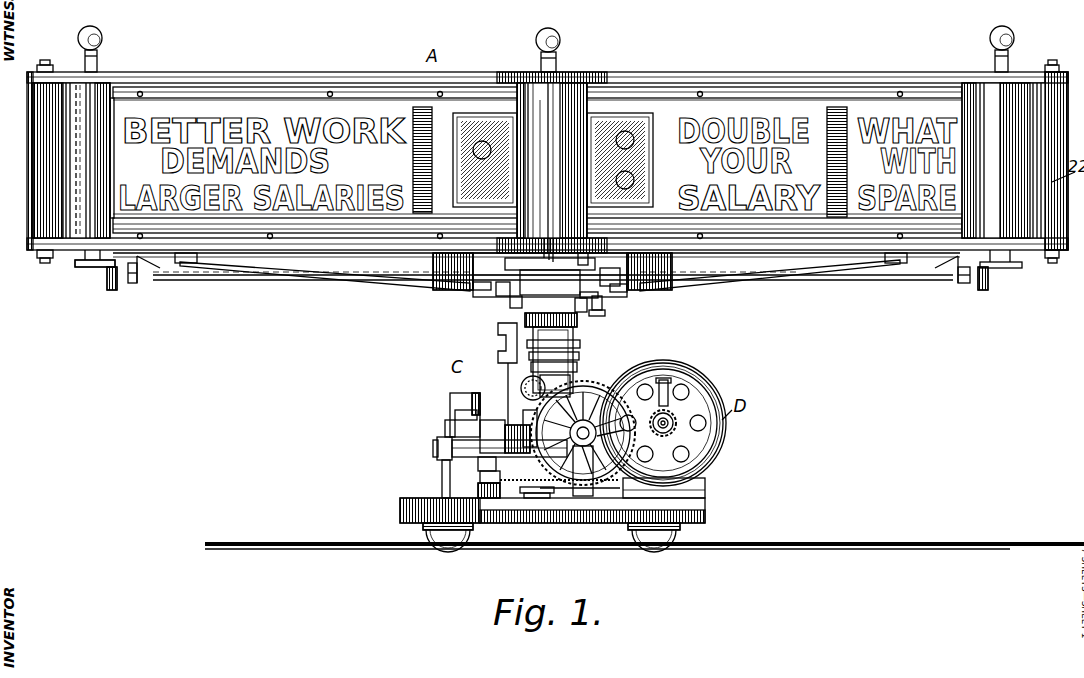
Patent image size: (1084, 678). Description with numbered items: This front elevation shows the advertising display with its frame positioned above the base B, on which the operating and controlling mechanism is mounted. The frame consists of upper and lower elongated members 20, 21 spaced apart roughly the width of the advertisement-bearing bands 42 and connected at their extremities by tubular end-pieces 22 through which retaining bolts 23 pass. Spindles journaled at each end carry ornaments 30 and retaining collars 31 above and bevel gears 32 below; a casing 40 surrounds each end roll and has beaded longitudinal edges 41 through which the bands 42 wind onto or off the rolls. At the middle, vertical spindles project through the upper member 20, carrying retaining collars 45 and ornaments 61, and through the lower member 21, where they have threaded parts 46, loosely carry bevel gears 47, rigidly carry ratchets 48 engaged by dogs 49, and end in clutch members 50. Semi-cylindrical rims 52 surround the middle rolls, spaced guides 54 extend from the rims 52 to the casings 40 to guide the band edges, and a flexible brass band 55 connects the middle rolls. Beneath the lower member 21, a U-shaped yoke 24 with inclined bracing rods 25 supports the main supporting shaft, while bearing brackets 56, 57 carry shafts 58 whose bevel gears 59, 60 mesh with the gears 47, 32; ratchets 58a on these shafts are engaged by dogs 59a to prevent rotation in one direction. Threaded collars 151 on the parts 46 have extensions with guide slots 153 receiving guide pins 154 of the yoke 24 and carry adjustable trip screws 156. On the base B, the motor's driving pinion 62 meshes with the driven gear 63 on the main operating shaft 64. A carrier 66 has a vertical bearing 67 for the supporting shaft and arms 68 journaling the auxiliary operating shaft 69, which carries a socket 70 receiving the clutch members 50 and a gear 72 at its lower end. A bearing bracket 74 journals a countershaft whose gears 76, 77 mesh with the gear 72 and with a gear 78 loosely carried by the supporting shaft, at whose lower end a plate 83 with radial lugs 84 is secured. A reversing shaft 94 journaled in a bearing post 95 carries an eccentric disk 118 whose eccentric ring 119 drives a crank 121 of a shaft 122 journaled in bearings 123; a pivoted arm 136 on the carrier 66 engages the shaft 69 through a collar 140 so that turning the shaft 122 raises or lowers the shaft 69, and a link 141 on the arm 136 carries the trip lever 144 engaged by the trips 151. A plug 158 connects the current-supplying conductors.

The upper elongated member 20 is at (360, 73).
The lower elongated member 21 is at (343, 245).
The tubular end-pieces 22 is at (40, 172).
The retaining bolts 23 is at (50, 69).
The U-shaped yoke 24 is at (510, 264).
The inclined bracing rods 25 is at (276, 266).
The ornaments 30 is at (101, 44).
The retaining collars 31 is at (98, 70).
The bevel gears 32 is at (86, 268).
The casing 40 is at (72, 116).
The beaded longitudinal edges 41 is at (110, 116).
The advertising strips or bands 42 is at (270, 110).
The retaining collars 45 is at (558, 70).
The threaded parts 46 is at (546, 255).
The bevel gears 47 is at (549, 256).
The ratchets 48 is at (553, 256).
The dogs 49 is at (584, 253).
The clutch member 50 is at (600, 253).
The semi-cylindrical rims 52 is at (546, 92).
The spaced guides 54 is at (766, 90).
The flexible connecting band 55 is at (531, 110).
The bearing bracket 56 is at (617, 270).
The bearing bracket 57 is at (134, 284).
The shafts 58 is at (309, 281).
The ratchets 58a is at (480, 290).
The bevel gear 59 is at (500, 290).
The dogs 59a is at (470, 258).
The bevel gear 60 is at (112, 291).
The ornaments 61 is at (557, 36).
The driving pinion 62 is at (673, 418).
The driven gear 63 is at (612, 382).
The main operating shaft 64 is at (590, 460).
The carrier 66 is at (600, 386).
The vertical bearing 67 is at (565, 370).
The laterally extended arms 68 is at (570, 358).
The auxiliary operating shaft 69 is at (560, 346).
The socket 70 is at (578, 347).
The gear 72 is at (640, 372).
The bearing bracket 74 is at (444, 482).
The gear 76 is at (482, 472).
The gear 77 is at (494, 498).
The gear 78 is at (537, 498).
The disk or plate 83 is at (558, 490).
The radially extending lugs 84 is at (524, 494).
The reversing shaft 94 is at (450, 432).
The bearing post 95 is at (458, 420).
The eccentric disk 118 is at (487, 420).
The eccentric ring 119 is at (476, 395).
The crank 121 is at (494, 426).
The shaft 122 is at (445, 458).
The bearings 123 is at (437, 447).
The pivoted arm 136 is at (529, 425).
The collar 140 is at (548, 385).
The link 141 is at (541, 316).
The trip lever 144 is at (505, 345).
The collars 151 is at (541, 252).
The guide slots 153 is at (515, 306).
The guide pins 154 is at (600, 296).
The trip screws 156 is at (588, 306).
The plug 158 is at (487, 484).
The base B is at (700, 513).